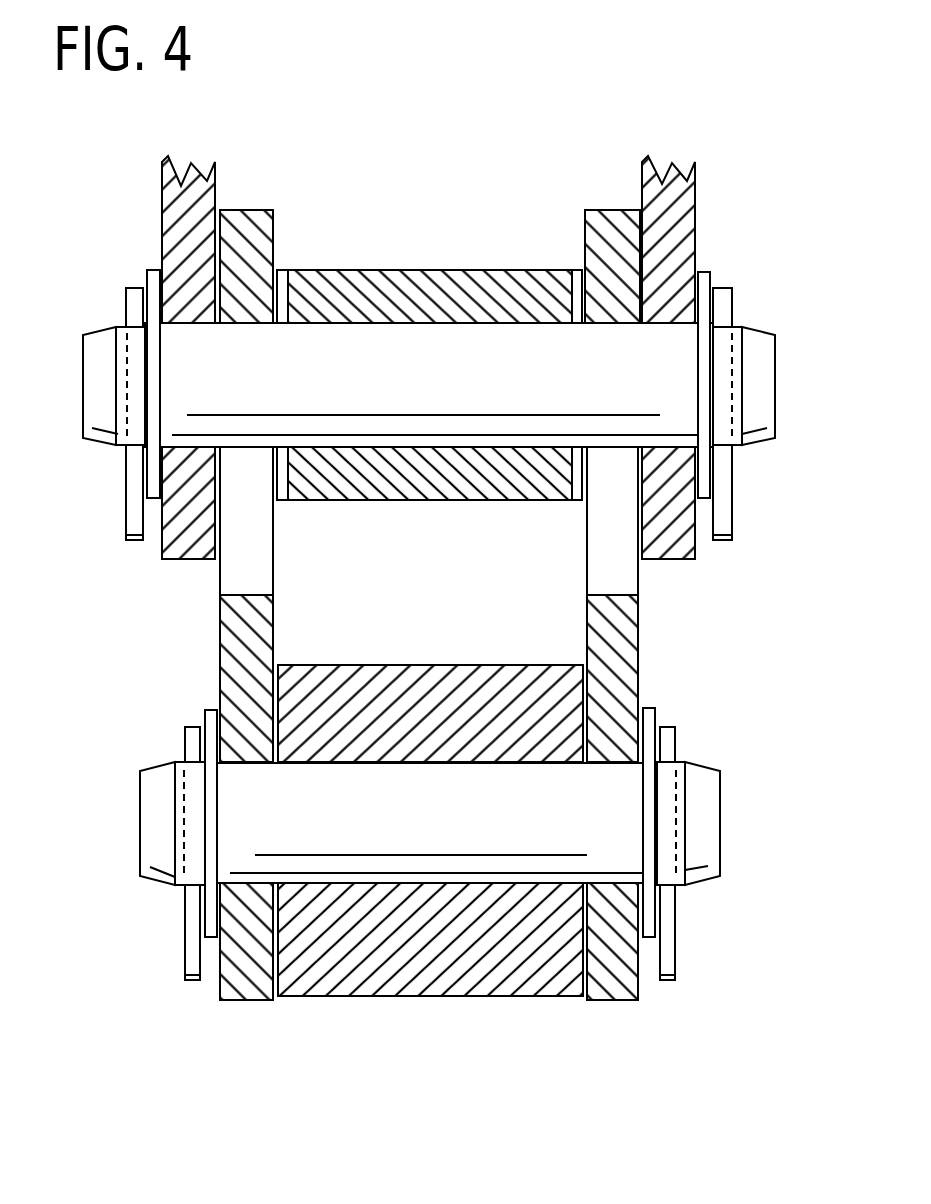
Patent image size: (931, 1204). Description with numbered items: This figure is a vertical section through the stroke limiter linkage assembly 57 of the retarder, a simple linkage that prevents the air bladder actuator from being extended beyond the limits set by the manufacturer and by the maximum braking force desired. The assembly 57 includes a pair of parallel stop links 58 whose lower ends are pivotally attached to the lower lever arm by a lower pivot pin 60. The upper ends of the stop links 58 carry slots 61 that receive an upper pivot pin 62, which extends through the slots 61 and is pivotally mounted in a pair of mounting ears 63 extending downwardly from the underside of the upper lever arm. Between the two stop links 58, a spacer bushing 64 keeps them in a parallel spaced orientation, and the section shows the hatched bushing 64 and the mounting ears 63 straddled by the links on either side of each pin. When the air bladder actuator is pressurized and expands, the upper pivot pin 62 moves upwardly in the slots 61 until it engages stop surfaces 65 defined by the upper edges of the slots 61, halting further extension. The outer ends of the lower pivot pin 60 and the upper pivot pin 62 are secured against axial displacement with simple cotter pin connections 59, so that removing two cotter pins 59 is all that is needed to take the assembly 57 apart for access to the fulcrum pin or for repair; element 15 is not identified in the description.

The roller 15 is at (465, 973).
The stroke limiter linkage assembly 57 is at (130, 629).
The stop links 58 is at (258, 243).
The cotter pin connections 59 is at (132, 482).
The lower pivot pin 60 is at (157, 843).
The slots 61 is at (232, 595).
The upper pivot pin 62 is at (762, 433).
The mounting ears 63 is at (182, 228).
The spacer bushing 64 is at (416, 285).
The stop surfaces 65 is at (242, 338).